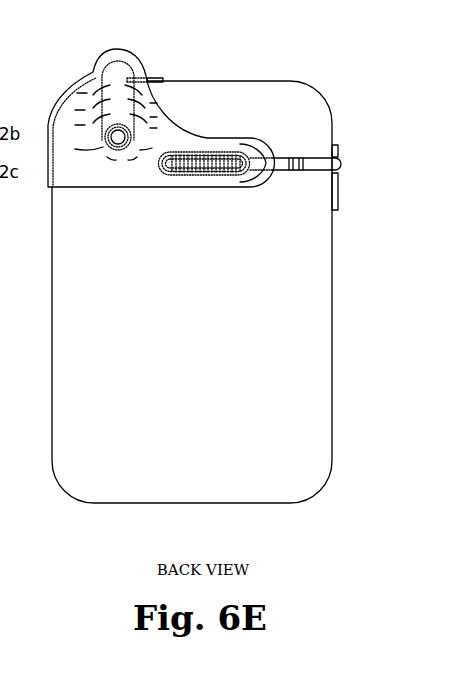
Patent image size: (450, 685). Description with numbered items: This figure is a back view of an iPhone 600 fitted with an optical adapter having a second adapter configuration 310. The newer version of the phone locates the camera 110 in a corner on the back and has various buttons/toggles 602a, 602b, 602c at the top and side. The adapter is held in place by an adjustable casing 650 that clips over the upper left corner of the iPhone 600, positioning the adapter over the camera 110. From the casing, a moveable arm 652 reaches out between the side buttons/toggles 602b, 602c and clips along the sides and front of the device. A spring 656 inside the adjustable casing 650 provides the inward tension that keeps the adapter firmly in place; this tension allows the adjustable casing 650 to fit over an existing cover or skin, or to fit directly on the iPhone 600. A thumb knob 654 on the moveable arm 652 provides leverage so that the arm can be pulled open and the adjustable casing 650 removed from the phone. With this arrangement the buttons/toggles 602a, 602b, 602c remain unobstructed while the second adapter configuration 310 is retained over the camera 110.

The second adapter configuration 310 is at (143, 50).
The adjustable casing 650 is at (97, 68).
The button/toggle 602a is at (147, 78).
The button/toggle 602b is at (338, 150).
The moveable arm 652 is at (340, 168).
The button/toggle 602c is at (338, 187).
The iPhone 600 is at (333, 288).
The thumb knob 654 is at (297, 172).
The spring 656 is at (192, 177).
The camera 110 is at (110, 147).